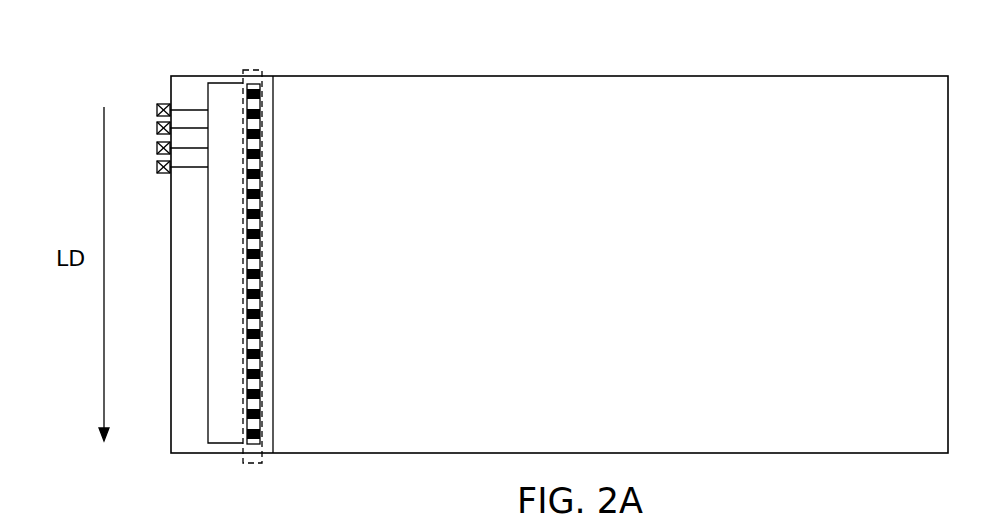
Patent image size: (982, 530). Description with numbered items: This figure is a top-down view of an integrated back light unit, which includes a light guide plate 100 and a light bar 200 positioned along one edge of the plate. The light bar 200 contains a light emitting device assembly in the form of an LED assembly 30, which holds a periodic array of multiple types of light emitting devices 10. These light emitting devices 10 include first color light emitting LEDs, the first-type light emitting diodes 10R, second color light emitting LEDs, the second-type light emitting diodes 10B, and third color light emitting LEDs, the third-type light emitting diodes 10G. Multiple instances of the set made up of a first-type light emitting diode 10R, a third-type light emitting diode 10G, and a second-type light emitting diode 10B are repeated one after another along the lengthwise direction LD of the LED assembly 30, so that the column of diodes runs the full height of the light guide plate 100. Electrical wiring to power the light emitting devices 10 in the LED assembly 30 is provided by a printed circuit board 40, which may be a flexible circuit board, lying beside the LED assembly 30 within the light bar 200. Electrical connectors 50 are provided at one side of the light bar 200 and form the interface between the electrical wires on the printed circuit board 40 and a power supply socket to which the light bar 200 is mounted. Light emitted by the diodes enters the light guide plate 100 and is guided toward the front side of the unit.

The light guide plate 100 is at (628, 256).
The light bar 200 is at (272, 60).
The printed circuit board 40 is at (241, 162).
The electrical connectors 50 is at (159, 106).
The LED assembly 30 is at (252, 465).
The light emitting devices 10 is at (362, 92).
The first-type light emitting diode 10R is at (257, 123).
The third-type light emitting diode 10G is at (257, 142).
The second-type light emitting diode 10B is at (257, 168).